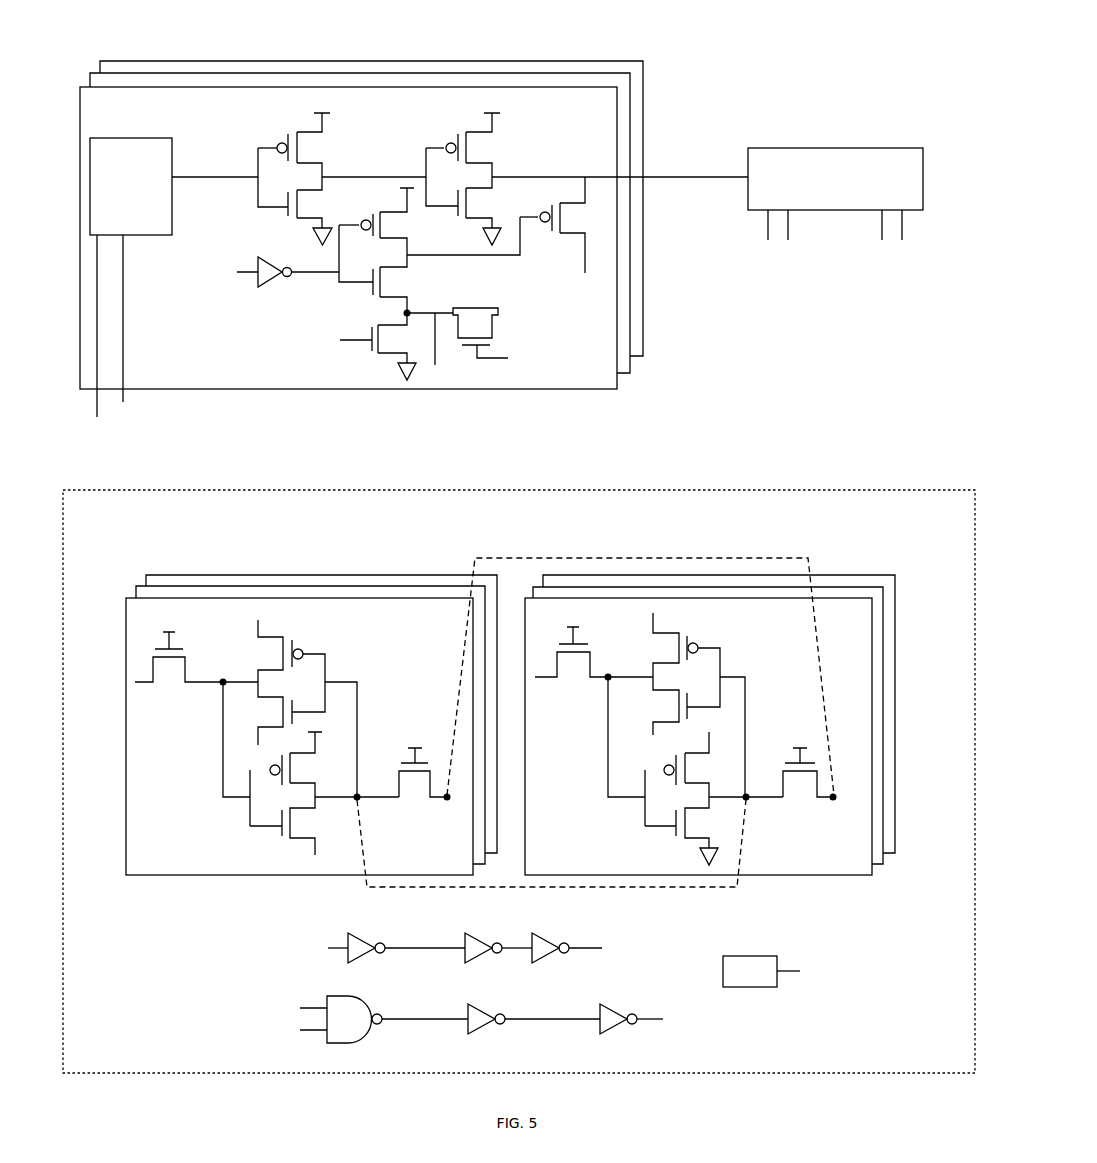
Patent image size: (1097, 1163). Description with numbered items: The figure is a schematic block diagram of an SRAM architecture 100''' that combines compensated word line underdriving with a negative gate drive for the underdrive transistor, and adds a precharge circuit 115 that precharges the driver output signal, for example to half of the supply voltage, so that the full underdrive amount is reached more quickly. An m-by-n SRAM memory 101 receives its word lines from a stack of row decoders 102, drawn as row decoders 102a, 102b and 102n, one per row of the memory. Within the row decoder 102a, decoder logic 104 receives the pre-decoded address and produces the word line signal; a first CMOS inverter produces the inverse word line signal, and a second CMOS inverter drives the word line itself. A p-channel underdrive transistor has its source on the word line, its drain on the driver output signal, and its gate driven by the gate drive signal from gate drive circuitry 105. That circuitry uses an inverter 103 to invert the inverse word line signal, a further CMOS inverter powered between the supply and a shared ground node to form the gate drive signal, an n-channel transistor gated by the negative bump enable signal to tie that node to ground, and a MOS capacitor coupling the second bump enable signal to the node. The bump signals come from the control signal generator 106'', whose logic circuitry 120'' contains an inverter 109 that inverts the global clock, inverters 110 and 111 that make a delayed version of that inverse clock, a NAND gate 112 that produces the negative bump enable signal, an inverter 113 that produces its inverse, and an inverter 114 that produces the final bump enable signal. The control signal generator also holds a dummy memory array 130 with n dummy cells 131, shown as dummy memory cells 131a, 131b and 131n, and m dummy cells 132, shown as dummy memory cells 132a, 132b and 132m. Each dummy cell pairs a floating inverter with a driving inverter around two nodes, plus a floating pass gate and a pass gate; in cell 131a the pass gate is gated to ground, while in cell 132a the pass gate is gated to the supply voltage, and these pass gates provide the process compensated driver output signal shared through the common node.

The SRAM architecture 100''' is at (499, 225).
The SRAM memory 101 is at (798, 147).
The row decoders 102 is at (65, 47).
The row decoder 102a is at (348, 265).
The row decoder 102b is at (124, 72).
The row decoder 102n is at (186, 60).
The inverter 103 is at (269, 286).
The decoder logic 104 is at (131, 186).
The gate drive circuitry 105 is at (205, 350).
The control signal generator 106'' is at (519, 763).
The inverter 109 is at (359, 959).
The inverter 110 is at (476, 959).
The inverter 111 is at (543, 959).
The NAND gate 112 is at (368, 1040).
The inverter 113 is at (479, 1030).
The inverter 114 is at (611, 1030).
The precharge circuit 115 is at (770, 987).
The logic circuitry 120'' is at (568, 983).
The dummy memory array 130 is at (779, 525).
The dummy memory cells 131 is at (105, 586).
The dummy memory cell 131a is at (299, 736).
The dummy memory cell 131b is at (198, 585).
The dummy memory cell 131n is at (258, 574).
The dummy memory cells 132 is at (895, 556).
The dummy memory cell 132a is at (698, 736).
The dummy memory cell 132b is at (845, 586).
The dummy memory cell 132m is at (897, 608).